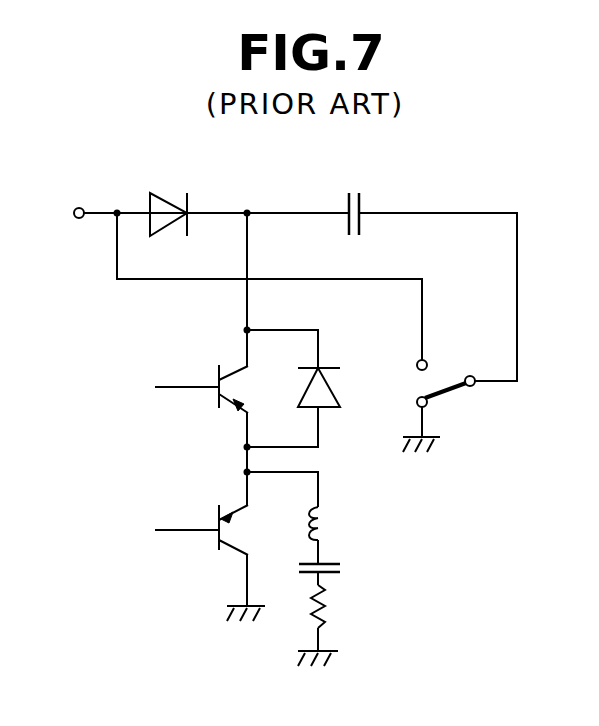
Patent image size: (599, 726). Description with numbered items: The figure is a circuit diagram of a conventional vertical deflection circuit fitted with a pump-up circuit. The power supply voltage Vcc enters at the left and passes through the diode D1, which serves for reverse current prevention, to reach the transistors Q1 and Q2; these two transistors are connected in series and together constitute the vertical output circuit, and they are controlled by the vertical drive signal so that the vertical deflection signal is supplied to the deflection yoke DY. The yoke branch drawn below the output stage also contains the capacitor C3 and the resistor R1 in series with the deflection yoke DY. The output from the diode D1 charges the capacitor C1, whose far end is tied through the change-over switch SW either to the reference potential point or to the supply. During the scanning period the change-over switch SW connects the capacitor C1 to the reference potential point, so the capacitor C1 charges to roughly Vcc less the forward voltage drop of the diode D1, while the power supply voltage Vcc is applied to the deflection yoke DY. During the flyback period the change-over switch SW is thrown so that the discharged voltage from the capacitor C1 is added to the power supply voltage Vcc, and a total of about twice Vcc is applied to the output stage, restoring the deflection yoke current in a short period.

The power supply voltage Vcc is at (77, 199).
The diode D1 is at (168, 201).
The capacitor C1 is at (352, 199).
The change-over switch SW is at (459, 391).
The transistor Q1 is at (201, 387).
The transistor Q2 is at (201, 529).
The deflection yoke DY is at (337, 523).
The capacitor C3 is at (337, 568).
The resistor R1 is at (339, 606).